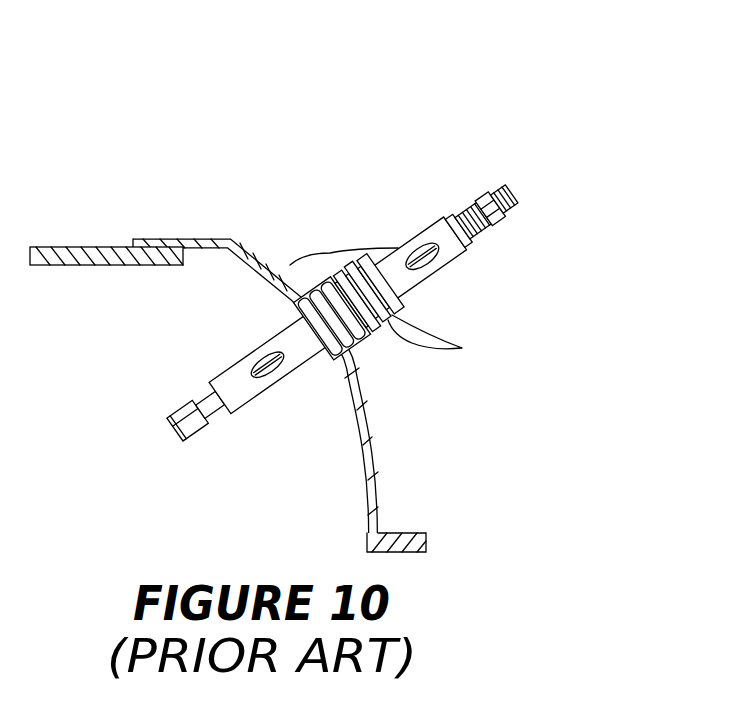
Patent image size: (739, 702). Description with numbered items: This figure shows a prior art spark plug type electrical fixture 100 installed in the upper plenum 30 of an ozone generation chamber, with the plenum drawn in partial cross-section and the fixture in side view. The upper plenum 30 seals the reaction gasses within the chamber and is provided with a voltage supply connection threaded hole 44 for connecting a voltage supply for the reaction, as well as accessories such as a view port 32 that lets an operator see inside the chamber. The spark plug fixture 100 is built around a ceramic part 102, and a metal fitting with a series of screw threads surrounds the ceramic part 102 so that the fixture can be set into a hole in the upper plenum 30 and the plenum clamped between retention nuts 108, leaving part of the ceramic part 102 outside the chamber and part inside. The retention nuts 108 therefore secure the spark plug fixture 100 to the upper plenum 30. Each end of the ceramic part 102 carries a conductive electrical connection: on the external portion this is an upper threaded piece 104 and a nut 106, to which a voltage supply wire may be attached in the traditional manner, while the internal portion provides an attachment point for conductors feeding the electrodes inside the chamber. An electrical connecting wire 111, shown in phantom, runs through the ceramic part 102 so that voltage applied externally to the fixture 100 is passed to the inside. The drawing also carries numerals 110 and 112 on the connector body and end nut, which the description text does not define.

The spark plug fixture 100 is at (353, 68).
The upper plenum 30 is at (217, 238).
The view port 32 is at (82, 247).
The voltage supply connection threaded hole 44 is at (353, 360).
The ceramic part 102 is at (440, 252).
The upper threaded piece 104 is at (467, 216).
The nut 106 is at (490, 193).
The retention nuts 108 is at (462, 348).
The connector body portion 110 is at (247, 385).
The electrical connecting wire 111 is at (260, 353).
The end nut 112 is at (200, 425).